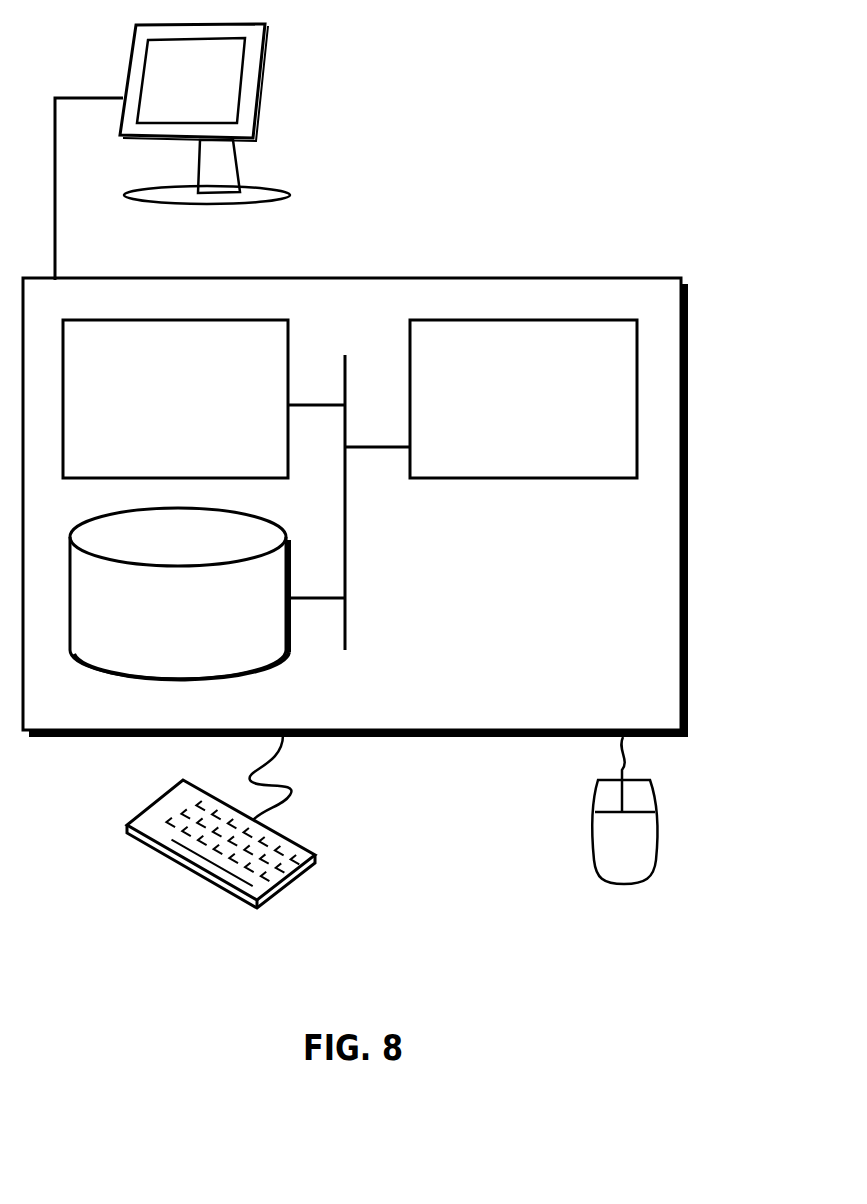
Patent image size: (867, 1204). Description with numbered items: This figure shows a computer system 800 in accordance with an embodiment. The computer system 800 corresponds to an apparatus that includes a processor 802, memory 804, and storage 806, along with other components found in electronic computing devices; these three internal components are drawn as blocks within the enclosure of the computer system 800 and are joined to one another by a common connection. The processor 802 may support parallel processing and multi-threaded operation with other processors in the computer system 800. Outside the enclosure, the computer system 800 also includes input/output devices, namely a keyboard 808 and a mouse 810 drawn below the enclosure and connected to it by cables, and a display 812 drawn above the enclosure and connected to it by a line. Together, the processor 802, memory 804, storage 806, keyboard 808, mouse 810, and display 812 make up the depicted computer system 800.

The computer system 800 is at (400, 257).
The processor 802 is at (507, 412).
The memory 804 is at (157, 411).
The storage 806 is at (163, 624).
The keyboard 808 is at (143, 840).
The mouse 810 is at (603, 852).
The display 812 is at (172, 152).